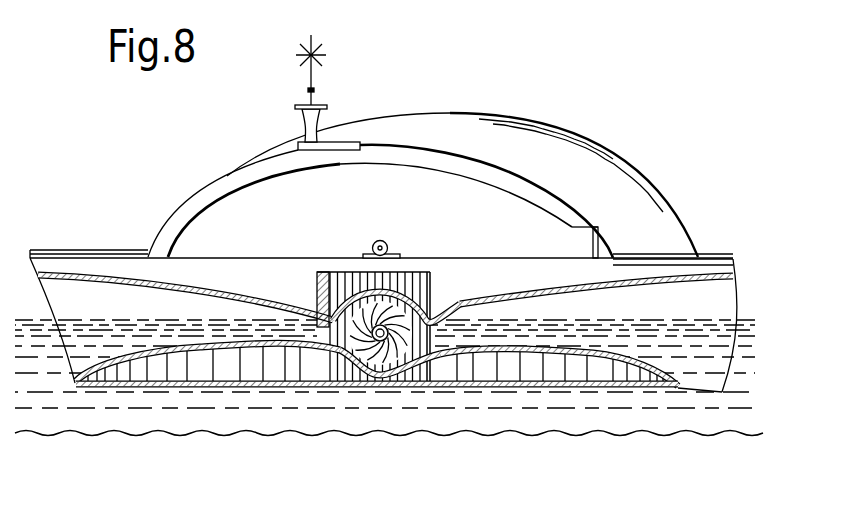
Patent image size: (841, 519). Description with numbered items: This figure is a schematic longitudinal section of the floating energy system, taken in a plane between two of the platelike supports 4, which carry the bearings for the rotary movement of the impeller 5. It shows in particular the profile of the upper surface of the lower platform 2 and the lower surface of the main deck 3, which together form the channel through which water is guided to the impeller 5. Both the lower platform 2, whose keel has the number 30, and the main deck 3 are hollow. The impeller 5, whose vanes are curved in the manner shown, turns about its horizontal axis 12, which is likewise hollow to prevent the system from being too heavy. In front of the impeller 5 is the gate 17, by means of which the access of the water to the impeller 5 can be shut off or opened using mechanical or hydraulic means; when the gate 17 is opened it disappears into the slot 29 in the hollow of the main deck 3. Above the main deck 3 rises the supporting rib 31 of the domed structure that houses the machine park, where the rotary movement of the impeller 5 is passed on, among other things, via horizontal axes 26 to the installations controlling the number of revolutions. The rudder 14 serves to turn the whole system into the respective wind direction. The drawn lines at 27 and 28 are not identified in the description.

The lower platform 2 is at (160, 387).
The main deck 3 is at (120, 275).
The platelike support 4 is at (347, 363).
The impeller 5 is at (398, 348).
The horizontal axis 12 is at (407, 335).
The rudder 14 is at (483, 138).
The gate 17 is at (342, 272).
The horizontal axes 26 is at (380, 241).
The deck 27 is at (75, 265).
The lower deflector body 28 is at (212, 373).
The slot 29 is at (318, 287).
The keel 30 is at (562, 390).
The supporting rib 31 is at (232, 182).